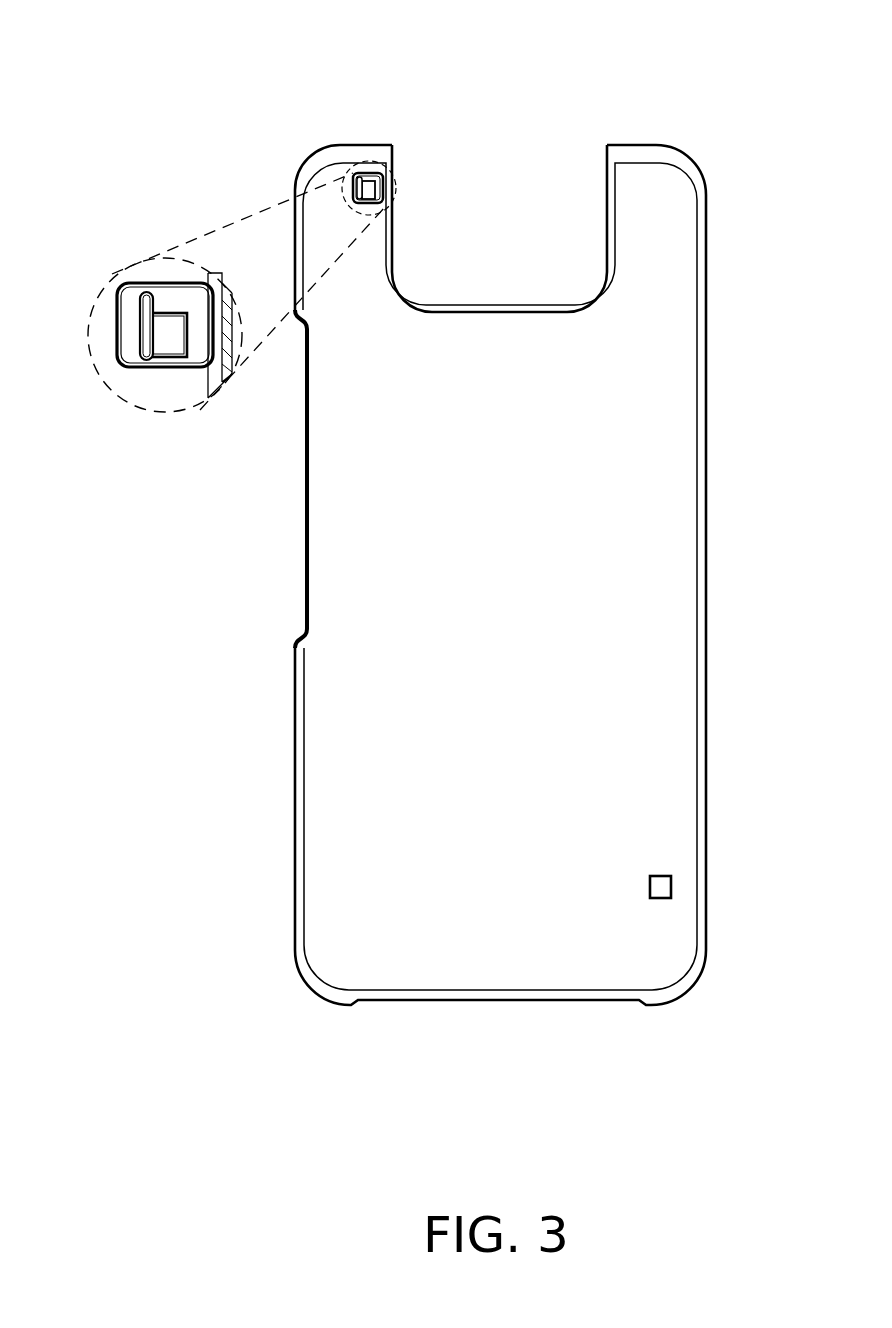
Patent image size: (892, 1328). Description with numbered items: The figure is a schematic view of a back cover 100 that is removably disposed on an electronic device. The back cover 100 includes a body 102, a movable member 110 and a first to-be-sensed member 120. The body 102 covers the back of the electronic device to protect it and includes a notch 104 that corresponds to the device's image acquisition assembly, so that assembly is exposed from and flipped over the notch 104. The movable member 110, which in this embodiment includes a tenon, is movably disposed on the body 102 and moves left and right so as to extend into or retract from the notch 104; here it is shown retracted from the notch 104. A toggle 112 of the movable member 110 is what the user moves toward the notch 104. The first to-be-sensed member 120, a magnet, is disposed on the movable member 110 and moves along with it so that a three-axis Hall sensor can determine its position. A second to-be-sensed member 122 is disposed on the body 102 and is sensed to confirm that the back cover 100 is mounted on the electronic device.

The back cover 100 is at (227, 71).
The body 102 is at (682, 351).
The notch 104 is at (467, 205).
The movable member 110 is at (379, 172).
The toggle 112 is at (362, 176).
The first to-be-sensed member 120 is at (352, 192).
The second to-be-sensed member 122 is at (672, 888).